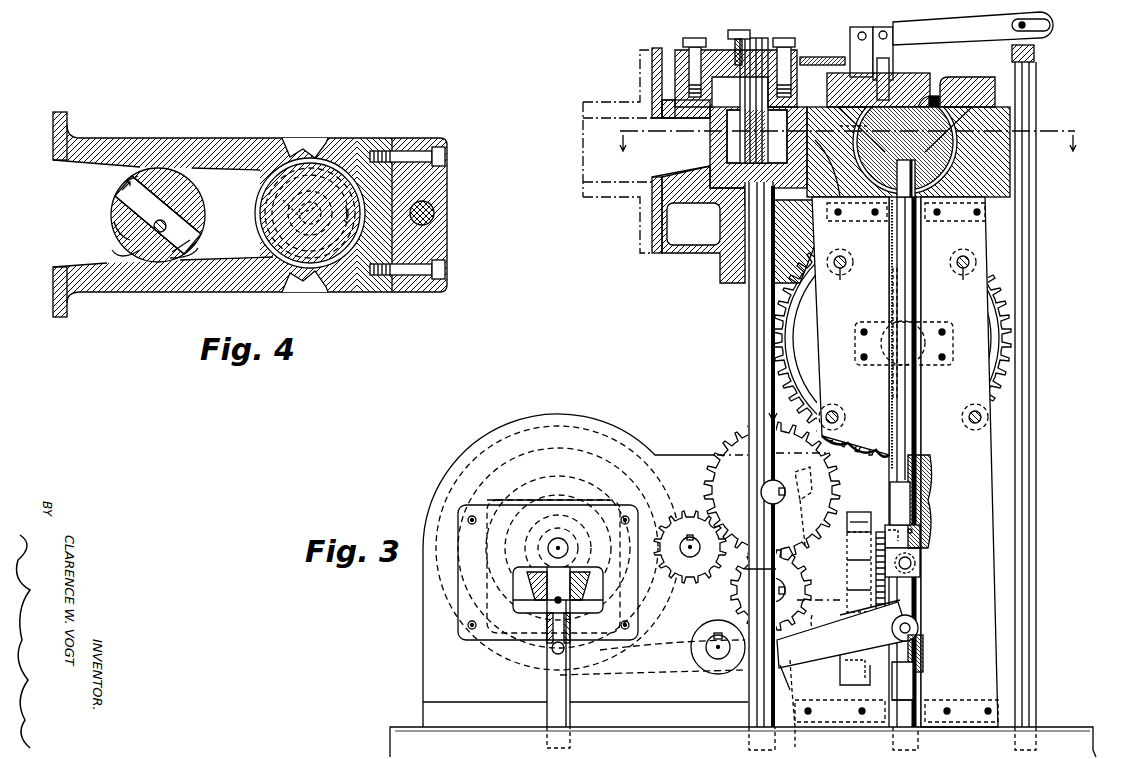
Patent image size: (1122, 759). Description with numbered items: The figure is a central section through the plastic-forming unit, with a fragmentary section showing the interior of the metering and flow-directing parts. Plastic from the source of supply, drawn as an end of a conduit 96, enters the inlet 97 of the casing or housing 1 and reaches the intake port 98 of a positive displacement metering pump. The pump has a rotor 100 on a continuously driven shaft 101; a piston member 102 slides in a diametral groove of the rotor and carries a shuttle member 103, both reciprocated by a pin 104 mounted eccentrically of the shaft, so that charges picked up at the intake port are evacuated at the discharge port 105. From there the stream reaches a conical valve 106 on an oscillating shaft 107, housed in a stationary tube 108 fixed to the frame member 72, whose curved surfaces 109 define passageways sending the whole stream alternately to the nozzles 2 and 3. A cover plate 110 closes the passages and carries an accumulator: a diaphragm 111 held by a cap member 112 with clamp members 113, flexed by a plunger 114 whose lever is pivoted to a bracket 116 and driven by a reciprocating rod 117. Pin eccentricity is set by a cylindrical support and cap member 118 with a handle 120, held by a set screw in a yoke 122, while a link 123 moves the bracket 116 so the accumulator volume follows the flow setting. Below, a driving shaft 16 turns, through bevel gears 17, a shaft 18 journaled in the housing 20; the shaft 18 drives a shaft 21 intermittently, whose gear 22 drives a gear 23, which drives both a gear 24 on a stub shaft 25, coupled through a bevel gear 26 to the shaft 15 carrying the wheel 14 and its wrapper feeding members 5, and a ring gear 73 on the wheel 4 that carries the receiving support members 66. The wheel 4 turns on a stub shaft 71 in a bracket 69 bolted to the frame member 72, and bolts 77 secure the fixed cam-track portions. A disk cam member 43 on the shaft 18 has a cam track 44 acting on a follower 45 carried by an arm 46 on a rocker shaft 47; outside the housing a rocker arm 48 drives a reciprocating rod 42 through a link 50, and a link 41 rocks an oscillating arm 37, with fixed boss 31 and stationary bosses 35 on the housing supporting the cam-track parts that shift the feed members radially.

In FIG. 4, the casing or housing 1 is at (185, 137).
In FIG. 3, the casing or housing 1 is at (690, 252).
In FIG. 4, the forming aperture or nozzle 2 is at (300, 137).
In FIG. 3, the forming aperture or nozzle 2 is at (946, 212).
In FIG. 4, the forming aperture or nozzle 3 is at (310, 292).
In FIG. 3, the wheel 4 is at (773, 372).
In FIG. 3, the wrapper feeding member 5 is at (925, 670).
In FIG. 3, the wheel 14 is at (890, 492).
In FIG. 3, the shaft 15 is at (820, 623).
In FIG. 3, the driving shaft 16 is at (547, 710).
In FIG. 3, the bevel gears 17 is at (535, 598).
In FIG. 3, the shaft 18 is at (548, 545).
In FIG. 3, the housing 20 is at (622, 425).
In FIG. 3, the shaft 21 is at (680, 547).
In FIG. 3, the gear 22 is at (684, 520).
In FIG. 3, the gear 23 is at (712, 455).
In FIG. 3, the gear 24 is at (740, 598).
In FIG. 3, the stub shaft 25 is at (751, 565).
In FIG. 3, the bevel gear 26 is at (818, 490).
In FIG. 3, the fixed boss 31 is at (858, 512).
In FIG. 3, the stationary boss 35 is at (852, 562).
In FIG. 3, the oscillating arm 37 is at (845, 685).
In FIG. 3, the link 41 is at (905, 603).
In FIG. 3, the reciprocating rod 42 is at (893, 300).
In FIG. 3, the disk cam member 43 is at (480, 462).
In FIG. 3, the cam track 44 is at (560, 475).
In FIG. 3, the follower 45 is at (545, 650).
In FIG. 3, the arm 46 is at (640, 670).
In FIG. 3, the rocker shaft 47 is at (712, 672).
In FIG. 3, the rocker arm 48 is at (750, 676).
In FIG. 3, the link 50 is at (918, 615).
In FIG. 3, the receiving support member 66 is at (930, 490).
In FIG. 3, the bracket 69 is at (876, 323).
In FIG. 3, the stub shaft 71 is at (890, 378).
In FIG. 3, the frame member 72 is at (980, 376).
In FIG. 3, the ring gear 73 is at (775, 322).
In FIG. 3, the bolt 77 is at (968, 415).
In FIG. 3, the conduit 96 is at (588, 100).
In FIG. 4, the inlet 97 is at (60, 168).
In FIG. 3, the inlet 97 is at (655, 168).
In FIG. 4, the intake port 98 is at (120, 260).
In FIG. 3, the intake port 98 is at (703, 140).
In FIG. 4, the rotor 100 is at (163, 160).
In FIG. 3, the rotor 100 is at (715, 153).
In FIG. 3, the shaft 101 is at (750, 305).
In FIG. 4, the piston member 102 is at (205, 183).
In FIG. 4, the shuttle member or secondary piston 103 is at (122, 215).
In FIG. 3, the shuttle member or secondary piston 103 is at (740, 126).
In FIG. 4, the pin 104 is at (180, 226).
In FIG. 3, the pin 104 is at (840, 126).
In FIG. 4, the discharge port 105 is at (198, 258).
In FIG. 3, the discharge port 105 is at (838, 160).
In FIG. 4, the conical valve 106 is at (336, 172).
In FIG. 3, the conical valve 106 is at (970, 122).
In FIG. 4, the oscillating shaft 107 is at (270, 238).
In FIG. 3, the oscillating shaft 107 is at (910, 242).
In FIG. 3, the stationary tube 108 is at (889, 250).
In FIG. 4, the curved surfaces 109 is at (260, 208).
In FIG. 3, the curved surfaces 109 is at (897, 158).
In FIG. 3, the cover plate 110 is at (675, 92).
In FIG. 3, the diaphragm 111 is at (925, 96).
In FIG. 3, the cap member 112 is at (940, 85).
In FIG. 3, the clamp members 113 is at (950, 25).
In FIG. 3, the plunger 114 is at (886, 35).
In FIG. 3, the bracket 116 is at (855, 40).
In FIG. 4, the reciprocating rod 117 is at (434, 213).
In FIG. 3, the reciprocating rod 117 is at (1036, 85).
In FIG. 3, the cylindrical support and cap member 118 is at (697, 47).
In FIG. 3, the handle 120 is at (746, 40).
In FIG. 3, the yoke 122 is at (690, 60).
In FIG. 3, the link 123 is at (812, 57).